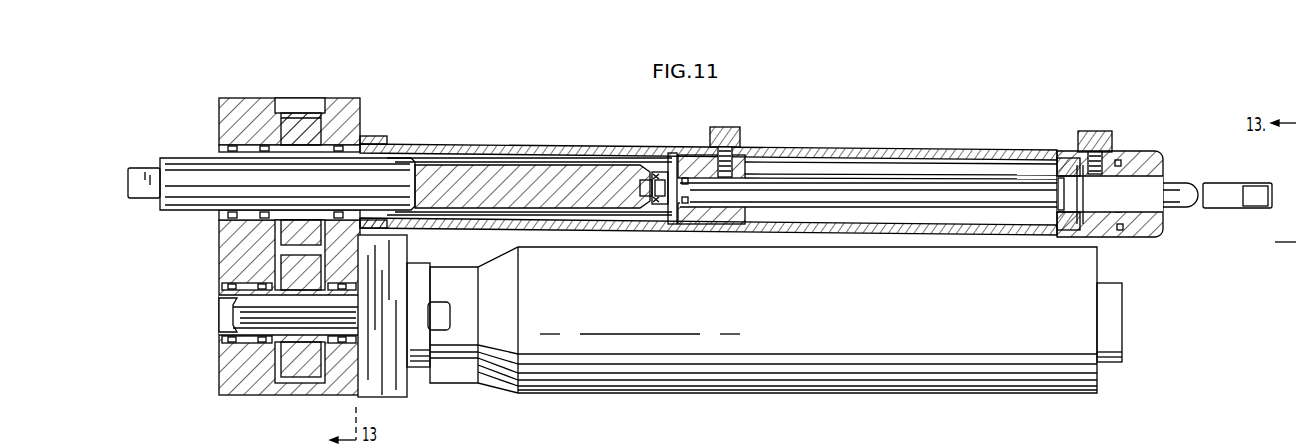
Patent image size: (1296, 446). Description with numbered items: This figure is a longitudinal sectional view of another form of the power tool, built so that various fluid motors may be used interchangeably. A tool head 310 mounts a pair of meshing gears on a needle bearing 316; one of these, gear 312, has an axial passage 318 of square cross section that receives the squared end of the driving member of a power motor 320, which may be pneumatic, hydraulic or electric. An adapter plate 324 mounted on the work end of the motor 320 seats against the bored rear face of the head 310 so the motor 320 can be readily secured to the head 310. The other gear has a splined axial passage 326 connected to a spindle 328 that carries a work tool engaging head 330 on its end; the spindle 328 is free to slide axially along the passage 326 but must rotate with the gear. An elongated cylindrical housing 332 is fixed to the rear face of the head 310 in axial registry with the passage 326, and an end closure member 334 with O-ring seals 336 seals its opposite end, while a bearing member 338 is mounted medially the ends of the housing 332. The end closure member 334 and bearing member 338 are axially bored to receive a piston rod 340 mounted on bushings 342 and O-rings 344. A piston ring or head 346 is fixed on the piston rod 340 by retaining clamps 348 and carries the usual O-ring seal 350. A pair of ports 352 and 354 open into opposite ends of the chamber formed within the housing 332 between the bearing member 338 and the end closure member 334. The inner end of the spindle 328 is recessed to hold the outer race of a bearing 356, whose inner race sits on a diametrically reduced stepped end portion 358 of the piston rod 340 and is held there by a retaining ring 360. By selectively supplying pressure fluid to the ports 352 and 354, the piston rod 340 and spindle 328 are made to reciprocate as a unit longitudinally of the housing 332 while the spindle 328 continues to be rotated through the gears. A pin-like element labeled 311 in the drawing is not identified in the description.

The tool head 310 is at (200, 366).
The upper pin 311 is at (306, 125).
The gear 312 is at (302, 363).
The needle bearing 316 is at (243, 286).
The axial passage 318 is at (232, 312).
The power motor 320 is at (686, 390).
The adapter plate 324 is at (400, 396).
The axial passage 326 is at (230, 166).
The spindle 328 is at (188, 158).
The work tool engaging head 330 is at (140, 170).
The elongated cylindrical housing 332 is at (497, 146).
The end closure member 334 is at (1147, 237).
The O-ring seals 336 is at (1120, 232).
The bearing member 338 is at (700, 153).
The piston rod 340 is at (907, 177).
The bushings 342 is at (722, 200).
The O-rings 344 is at (686, 174).
The piston ring or head 346 is at (1052, 185).
The retaining clamps 348 is at (1046, 180).
The O-ring seal 350 is at (1068, 172).
The port 352 is at (737, 130).
The port 354 is at (1095, 131).
The bearing 356 is at (656, 176).
The diametrically reduced stepped end portion 358 is at (672, 224).
The retaining ring 360 is at (643, 178).